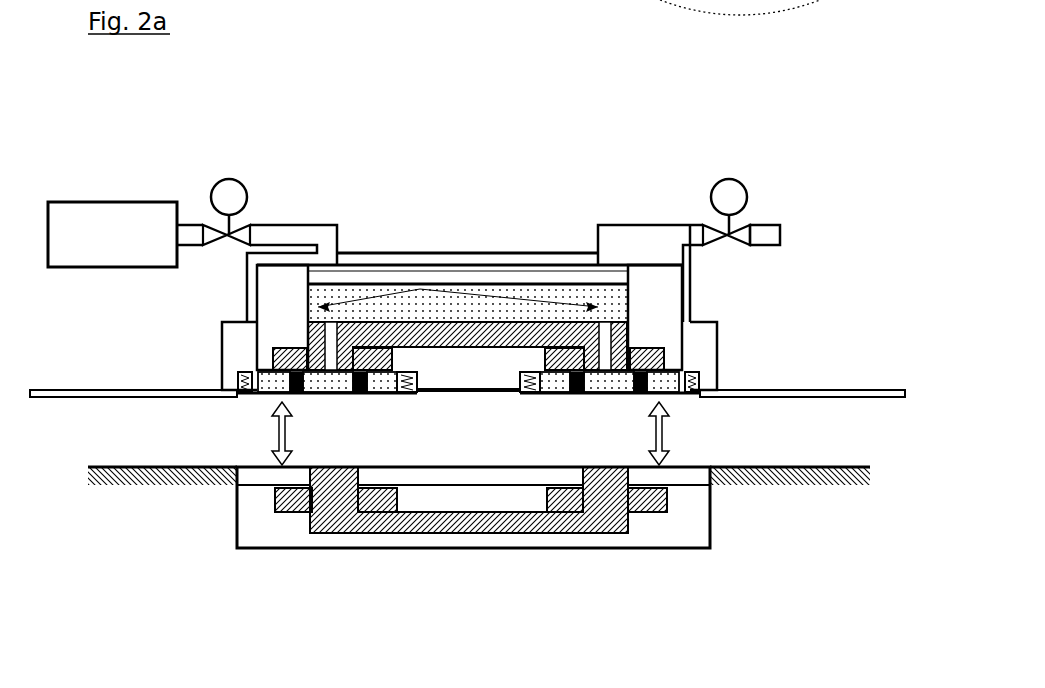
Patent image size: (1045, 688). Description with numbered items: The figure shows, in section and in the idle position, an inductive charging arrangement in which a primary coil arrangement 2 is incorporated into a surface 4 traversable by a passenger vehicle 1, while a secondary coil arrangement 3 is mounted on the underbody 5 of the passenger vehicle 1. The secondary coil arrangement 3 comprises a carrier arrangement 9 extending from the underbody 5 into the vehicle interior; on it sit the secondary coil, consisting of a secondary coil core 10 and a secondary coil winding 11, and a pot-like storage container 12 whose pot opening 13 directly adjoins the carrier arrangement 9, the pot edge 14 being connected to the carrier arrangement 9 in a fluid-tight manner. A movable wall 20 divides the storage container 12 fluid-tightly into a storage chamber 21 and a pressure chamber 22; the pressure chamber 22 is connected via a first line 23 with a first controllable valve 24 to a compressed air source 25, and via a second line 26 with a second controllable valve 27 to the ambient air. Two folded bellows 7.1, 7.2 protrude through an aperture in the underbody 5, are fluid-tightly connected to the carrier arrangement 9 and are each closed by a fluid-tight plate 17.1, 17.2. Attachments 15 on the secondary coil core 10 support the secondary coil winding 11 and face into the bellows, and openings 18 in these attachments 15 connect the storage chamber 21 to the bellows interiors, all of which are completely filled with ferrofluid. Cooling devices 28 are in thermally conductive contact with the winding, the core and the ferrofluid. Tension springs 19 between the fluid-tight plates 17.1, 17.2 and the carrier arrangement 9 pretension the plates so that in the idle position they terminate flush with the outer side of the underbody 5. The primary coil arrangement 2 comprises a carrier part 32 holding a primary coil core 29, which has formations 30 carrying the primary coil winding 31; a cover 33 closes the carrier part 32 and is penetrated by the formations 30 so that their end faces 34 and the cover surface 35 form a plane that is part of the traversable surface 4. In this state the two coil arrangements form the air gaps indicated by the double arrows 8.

The passenger vehicle 1 is at (391, 81).
The primary coil arrangement 2 is at (658, 574).
The secondary coil arrangement 3 is at (440, 232).
The traversable surface 4 is at (112, 467).
The underbody 5 is at (143, 403).
The folded bellows 7.1 is at (237, 381).
The folded bellows 7.2 is at (700, 384).
The double arrows 8 is at (276, 440).
The carrier arrangement 9 is at (236, 350).
The secondary coil core 10 is at (630, 327).
The secondary coil winding 11 is at (430, 390).
The pot-like storage container 12 is at (508, 251).
The pot opening 13 is at (420, 289).
The pot edge 14 is at (243, 306).
The attachments 15 is at (347, 395).
The fluid-tight plate 17.1 is at (366, 372).
The fluid-tight plate 17.2 is at (665, 375).
The openings 18 is at (233, 352).
The tension springs 19 is at (303, 385).
The movable wall 20 is at (363, 266).
The storage chamber 21 is at (618, 286).
The pressure chamber 22 is at (469, 253).
The first line 23 is at (277, 225).
The first controllable valve 24 is at (226, 238).
The compressed air source 25 is at (90, 217).
The second line 26 is at (658, 225).
The second controllable valve 27 is at (733, 240).
The cooling devices 28 is at (270, 333).
The primary coil core 29 is at (520, 535).
The formations 30 is at (333, 530).
The primary coil winding 31 is at (273, 498).
The carrier part 32 is at (258, 525).
The cover 33 is at (268, 473).
The end faces 34 is at (331, 466).
The cover surface 35 is at (551, 466).